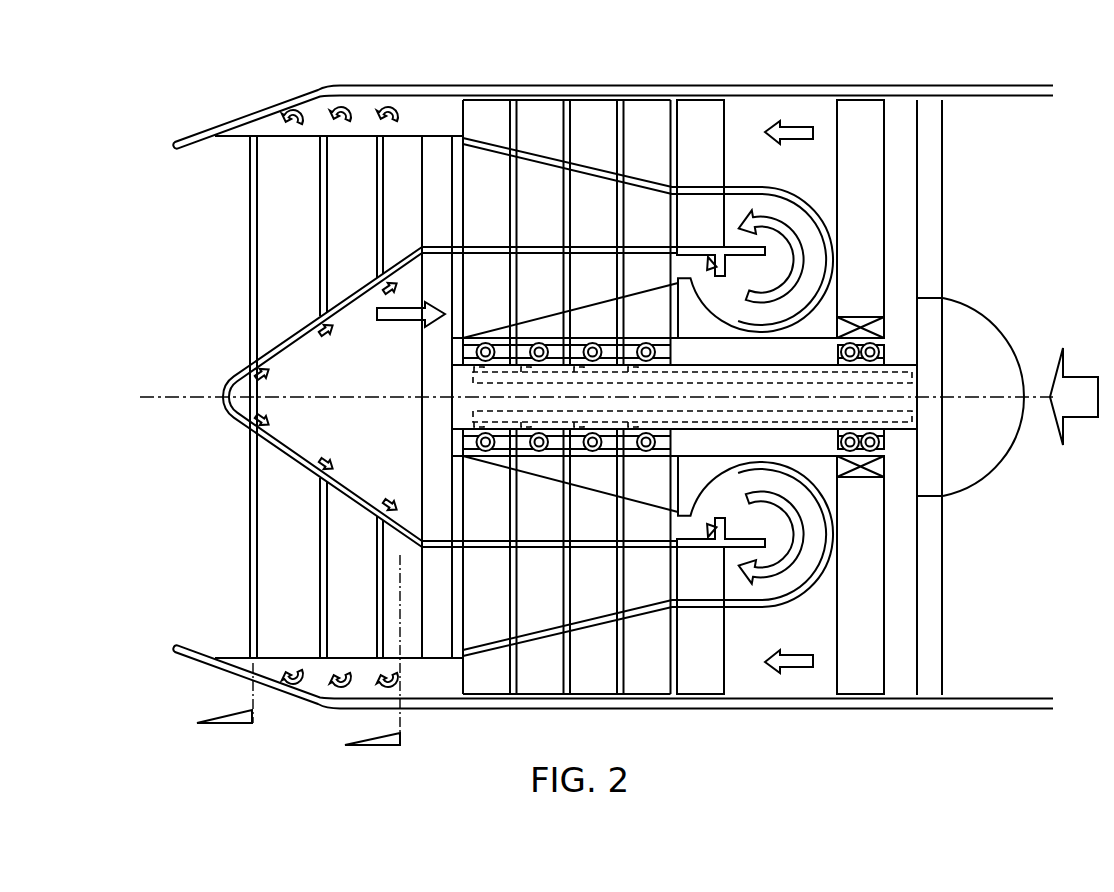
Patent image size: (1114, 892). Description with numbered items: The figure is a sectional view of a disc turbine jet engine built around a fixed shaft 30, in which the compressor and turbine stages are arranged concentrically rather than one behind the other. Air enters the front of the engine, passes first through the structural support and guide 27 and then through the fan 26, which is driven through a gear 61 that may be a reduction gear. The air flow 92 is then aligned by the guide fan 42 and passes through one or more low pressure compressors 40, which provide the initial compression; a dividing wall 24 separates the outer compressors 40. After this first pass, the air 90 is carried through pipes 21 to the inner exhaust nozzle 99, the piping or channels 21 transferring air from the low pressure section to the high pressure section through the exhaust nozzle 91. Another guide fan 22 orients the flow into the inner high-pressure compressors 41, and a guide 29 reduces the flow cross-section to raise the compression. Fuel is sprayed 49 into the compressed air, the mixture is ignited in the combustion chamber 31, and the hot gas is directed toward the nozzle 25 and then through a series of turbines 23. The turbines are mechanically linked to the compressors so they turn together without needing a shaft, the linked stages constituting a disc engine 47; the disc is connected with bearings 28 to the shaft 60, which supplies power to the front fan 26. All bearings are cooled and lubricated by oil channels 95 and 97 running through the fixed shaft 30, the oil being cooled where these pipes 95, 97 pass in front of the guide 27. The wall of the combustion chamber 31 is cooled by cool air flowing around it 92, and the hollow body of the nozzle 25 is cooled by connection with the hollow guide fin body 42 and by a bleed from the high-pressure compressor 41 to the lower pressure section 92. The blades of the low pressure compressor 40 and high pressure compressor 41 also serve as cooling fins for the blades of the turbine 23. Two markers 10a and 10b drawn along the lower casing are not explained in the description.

The section line 10a is at (343, 656).
The section line 10b is at (194, 701).
The pipes 21 is at (248, 175).
The guide fan 22 is at (430, 330).
The turbines 23 is at (525, 177).
The dividing wall 24 is at (228, 118).
The nozzle 25 is at (715, 210).
The fan 26 is at (890, 97).
The structural support and guide 27 is at (943, 133).
The bearings 28 is at (883, 447).
The guide 29 is at (637, 295).
The fixed shaft 30 is at (940, 320).
The combustion chamber 31 is at (780, 243).
The low pressure compressor 40 is at (612, 103).
The high-pressure compressor 41 is at (543, 250).
The guide fan 42 is at (727, 105).
The disc engine 47 is at (790, 87).
The fuel spray 49 is at (712, 268).
The shaft 60 is at (793, 337).
The gear 61 is at (875, 317).
The air flow 90 is at (287, 125).
The exhaust nozzle 91 is at (315, 472).
The air flow 92 is at (793, 123).
The oil channel 95 is at (910, 378).
The oil channel 97 is at (902, 423).
The inner exhaust nozzle 99 is at (230, 418).